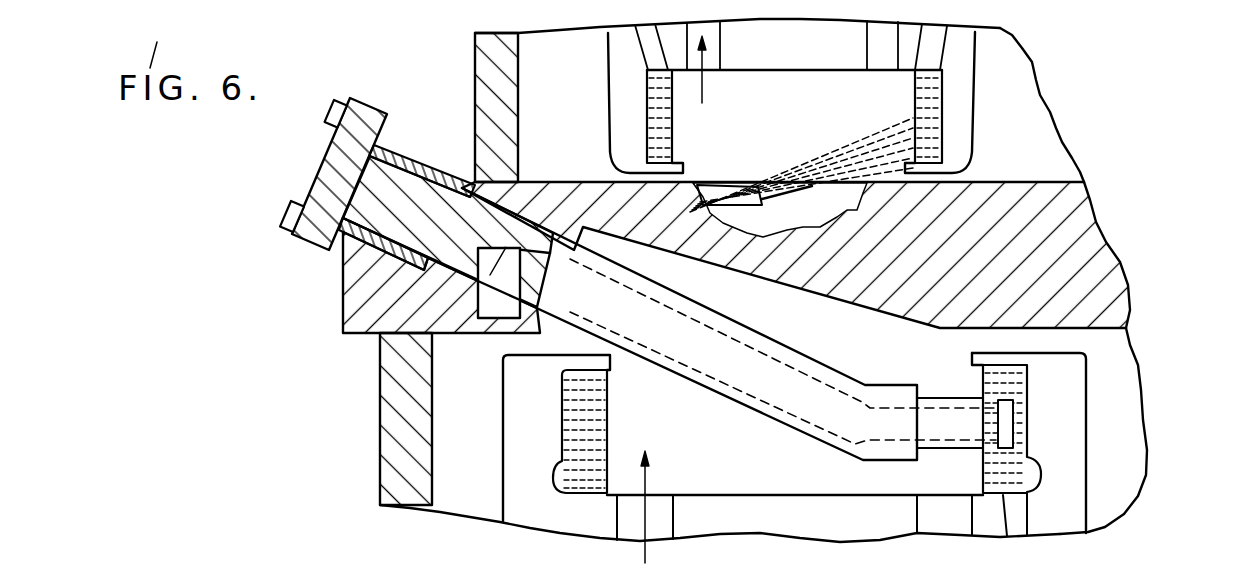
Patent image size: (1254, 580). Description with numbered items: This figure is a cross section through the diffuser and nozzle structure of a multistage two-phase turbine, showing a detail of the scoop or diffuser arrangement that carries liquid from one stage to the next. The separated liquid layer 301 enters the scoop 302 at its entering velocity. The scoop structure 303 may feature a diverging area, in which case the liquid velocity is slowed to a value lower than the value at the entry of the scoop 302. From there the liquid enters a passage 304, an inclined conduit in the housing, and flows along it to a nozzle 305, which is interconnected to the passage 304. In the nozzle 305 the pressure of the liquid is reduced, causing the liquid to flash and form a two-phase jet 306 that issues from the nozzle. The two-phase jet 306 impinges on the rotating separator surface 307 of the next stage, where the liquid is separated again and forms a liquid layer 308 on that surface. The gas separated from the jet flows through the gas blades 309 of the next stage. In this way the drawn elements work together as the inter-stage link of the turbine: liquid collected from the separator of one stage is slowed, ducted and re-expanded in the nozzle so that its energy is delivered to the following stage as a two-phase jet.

The separated liquid layer 301 is at (1017, 477).
The scoop 302 is at (1007, 420).
The scoop structure 303 is at (947, 398).
The passage 304 is at (490, 312).
The nozzle 305 is at (732, 198).
The two-phase jet 306 is at (830, 155).
The rotating separator surface 307 is at (975, 124).
The liquid layer 308 is at (937, 87).
The gas blades 309 is at (717, 50).